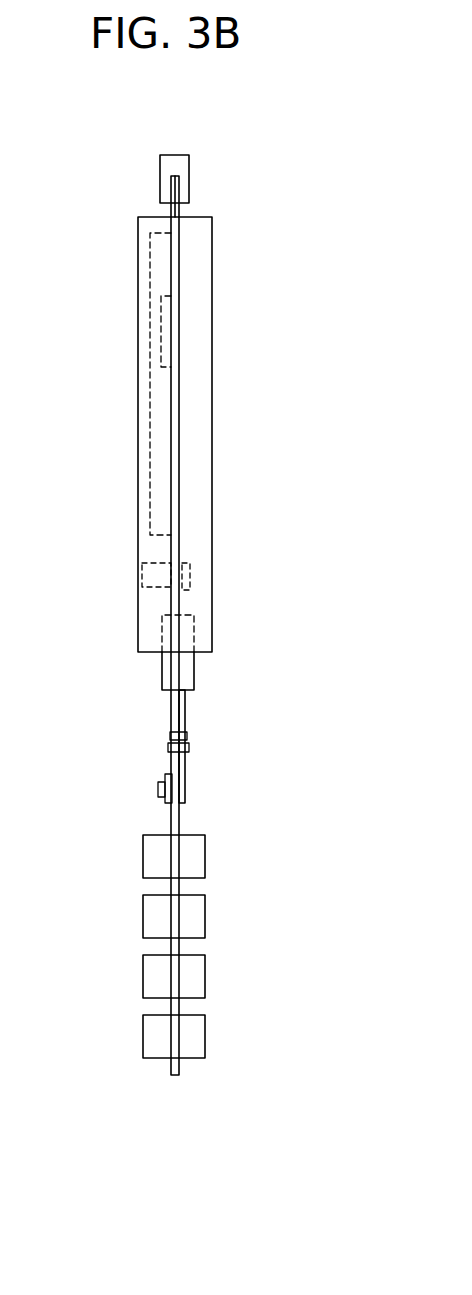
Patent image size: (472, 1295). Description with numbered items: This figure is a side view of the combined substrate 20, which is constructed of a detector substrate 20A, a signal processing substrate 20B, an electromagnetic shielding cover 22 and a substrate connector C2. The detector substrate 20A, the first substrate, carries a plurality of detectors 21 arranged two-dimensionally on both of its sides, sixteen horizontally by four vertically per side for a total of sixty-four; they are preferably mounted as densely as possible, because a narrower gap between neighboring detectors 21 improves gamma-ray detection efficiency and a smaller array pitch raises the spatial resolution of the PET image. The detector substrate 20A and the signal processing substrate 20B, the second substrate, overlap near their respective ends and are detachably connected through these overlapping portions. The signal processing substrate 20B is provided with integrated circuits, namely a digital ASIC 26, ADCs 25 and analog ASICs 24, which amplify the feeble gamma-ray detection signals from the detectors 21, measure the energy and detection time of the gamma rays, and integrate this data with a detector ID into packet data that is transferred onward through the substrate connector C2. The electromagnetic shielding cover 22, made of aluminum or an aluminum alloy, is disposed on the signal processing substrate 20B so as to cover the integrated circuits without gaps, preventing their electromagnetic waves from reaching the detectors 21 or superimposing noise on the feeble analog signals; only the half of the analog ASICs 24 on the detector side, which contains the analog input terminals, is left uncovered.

The combined substrate 20 is at (120, 168).
The detector substrate 20A is at (149, 819).
The signal processing substrate 20B is at (133, 280).
The detectors 21 is at (218, 832).
The electromagnetic shielding cover 22 is at (138, 375).
The analog ASICs 24 is at (176, 688).
The ADCs 25 is at (165, 587).
The digital ASIC 26 is at (165, 462).
The substrate connector C2 is at (177, 154).